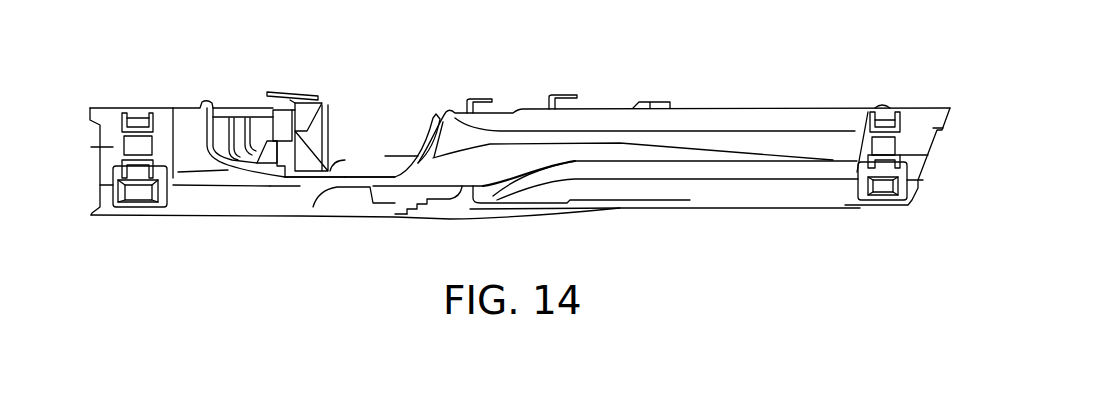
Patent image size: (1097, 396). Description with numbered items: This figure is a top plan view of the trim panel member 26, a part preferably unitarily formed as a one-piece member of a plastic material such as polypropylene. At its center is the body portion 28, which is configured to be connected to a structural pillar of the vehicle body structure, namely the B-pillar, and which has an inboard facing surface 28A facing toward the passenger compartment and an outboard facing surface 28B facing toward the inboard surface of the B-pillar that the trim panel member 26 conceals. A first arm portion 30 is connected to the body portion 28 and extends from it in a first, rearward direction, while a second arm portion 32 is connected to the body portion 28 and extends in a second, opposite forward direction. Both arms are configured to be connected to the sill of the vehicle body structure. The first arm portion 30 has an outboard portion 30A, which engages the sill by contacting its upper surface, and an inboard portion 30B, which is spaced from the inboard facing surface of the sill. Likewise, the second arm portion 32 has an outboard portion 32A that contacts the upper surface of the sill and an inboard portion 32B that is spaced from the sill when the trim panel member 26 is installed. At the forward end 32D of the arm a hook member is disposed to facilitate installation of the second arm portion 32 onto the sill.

The trim panel member 26 is at (655, 42).
The body portion 28 is at (207, 130).
The inboard facing surface 28A is at (295, 183).
The outboard facing surface 28B is at (340, 170).
The first arm portion 30 is at (112, 148).
The outboard portion 30A is at (133, 107).
The inboard portion 30B is at (130, 218).
The second arm portion 32 is at (783, 120).
The outboard portion 32A is at (920, 108).
The inboard portion 32B is at (887, 207).
The forward end 32D is at (935, 147).